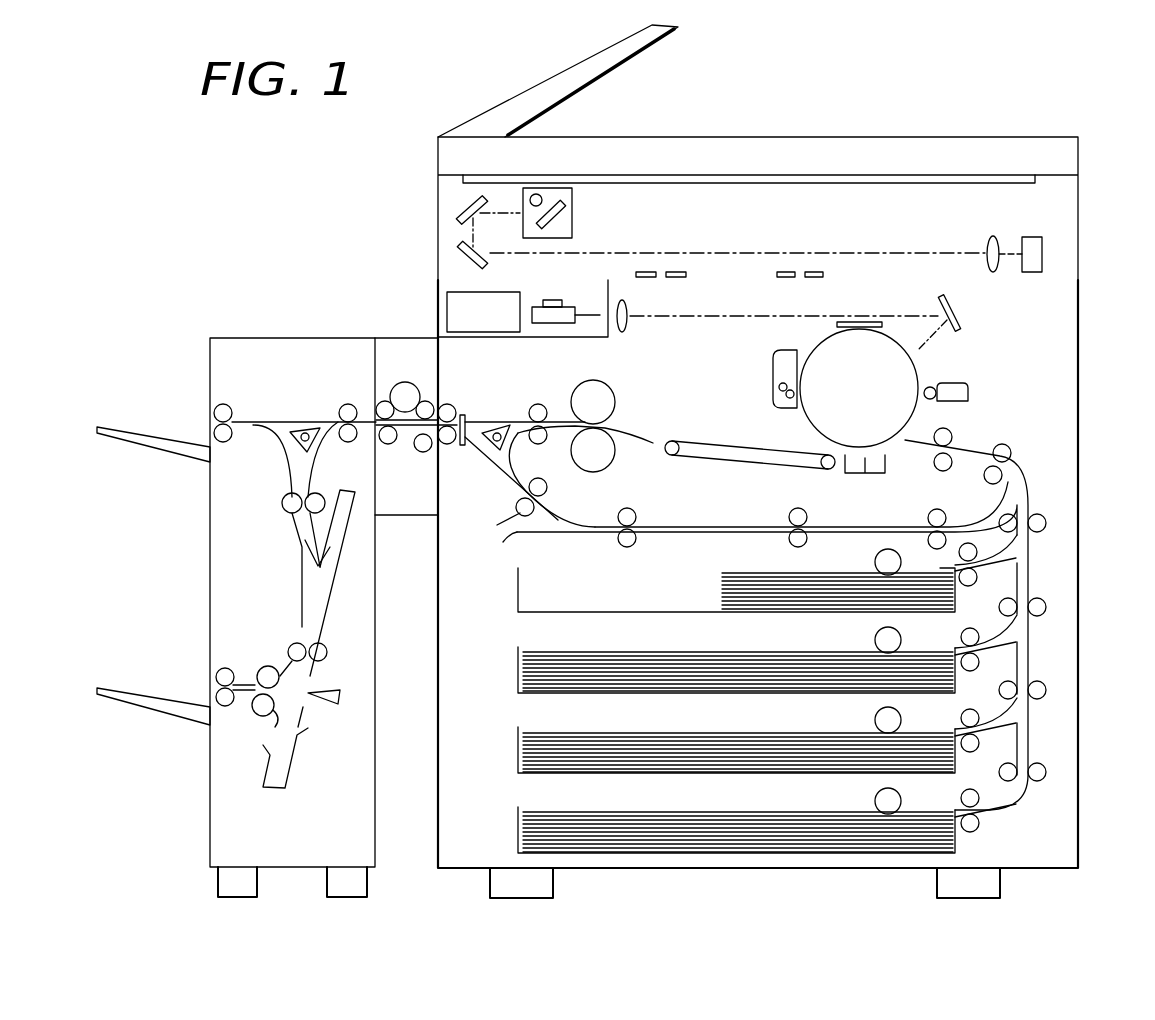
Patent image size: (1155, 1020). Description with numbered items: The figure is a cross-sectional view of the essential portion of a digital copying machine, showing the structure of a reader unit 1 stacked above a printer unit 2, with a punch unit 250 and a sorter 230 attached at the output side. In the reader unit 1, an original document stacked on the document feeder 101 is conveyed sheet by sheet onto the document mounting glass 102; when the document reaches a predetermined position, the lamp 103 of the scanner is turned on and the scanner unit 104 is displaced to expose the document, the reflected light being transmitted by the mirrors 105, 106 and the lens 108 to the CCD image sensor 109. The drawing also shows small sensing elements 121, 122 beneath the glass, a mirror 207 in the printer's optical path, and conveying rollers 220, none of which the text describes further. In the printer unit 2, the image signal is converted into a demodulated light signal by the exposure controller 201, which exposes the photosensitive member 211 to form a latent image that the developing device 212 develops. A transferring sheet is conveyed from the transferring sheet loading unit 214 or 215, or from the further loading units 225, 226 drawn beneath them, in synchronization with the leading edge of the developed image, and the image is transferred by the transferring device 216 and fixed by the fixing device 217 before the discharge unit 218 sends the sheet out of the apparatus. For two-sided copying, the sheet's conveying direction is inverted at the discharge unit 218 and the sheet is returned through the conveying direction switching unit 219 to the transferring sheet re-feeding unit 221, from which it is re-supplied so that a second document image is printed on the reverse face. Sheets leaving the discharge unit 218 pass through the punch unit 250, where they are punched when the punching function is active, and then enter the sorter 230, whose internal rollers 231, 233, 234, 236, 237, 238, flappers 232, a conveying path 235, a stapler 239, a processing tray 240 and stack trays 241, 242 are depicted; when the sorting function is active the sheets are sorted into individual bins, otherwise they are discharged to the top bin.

The reader unit 1 is at (1078, 222).
The printer unit 2 is at (1078, 547).
The document feeder 101 is at (548, 80).
The document mounting glass 102 is at (800, 175).
The lamp 103 is at (537, 192).
The scanner unit 104 is at (575, 197).
The mirror 105 is at (465, 205).
The mirror 106 is at (455, 255).
The lens 108 is at (993, 236).
The CCD image sensor 109 is at (1035, 236).
The sensor 121 is at (665, 272).
The sensor 122 is at (800, 272).
The exposure controller 201 is at (615, 297).
The mirror 207 is at (965, 306).
The photosensitive member 211 is at (808, 362).
The developing device 212 is at (960, 384).
The transferring sheet loading unit 214 is at (517, 593).
The transferring sheet loading unit 215 is at (517, 670).
The transferring device 216 is at (858, 475).
The fixing device 217 is at (612, 447).
The discharge unit 218 is at (482, 430).
The conveying direction switching unit 219 is at (453, 405).
The conveying rollers 220 is at (508, 425).
The transferring sheet re-feeding unit 221 is at (598, 525).
The sheet cassette 225 is at (517, 748).
The sheet cassette 226 is at (517, 830).
The sorter 230 is at (262, 338).
The inlet rollers 231 is at (345, 405).
The flapper 232 is at (298, 430).
The discharge rollers 233 is at (222, 405).
The conveying rollers 234 is at (292, 480).
The conveying path 235 is at (302, 547).
The conveying rollers 236 is at (325, 652).
The discharge rollers 237 is at (265, 665).
The discharge rollers 238 is at (222, 670).
The stapler 239 is at (335, 705).
The processing tray 240 is at (280, 790).
The stack tray 241 is at (158, 695).
The stack tray 242 is at (158, 432).
The punch unit 250 is at (402, 338).